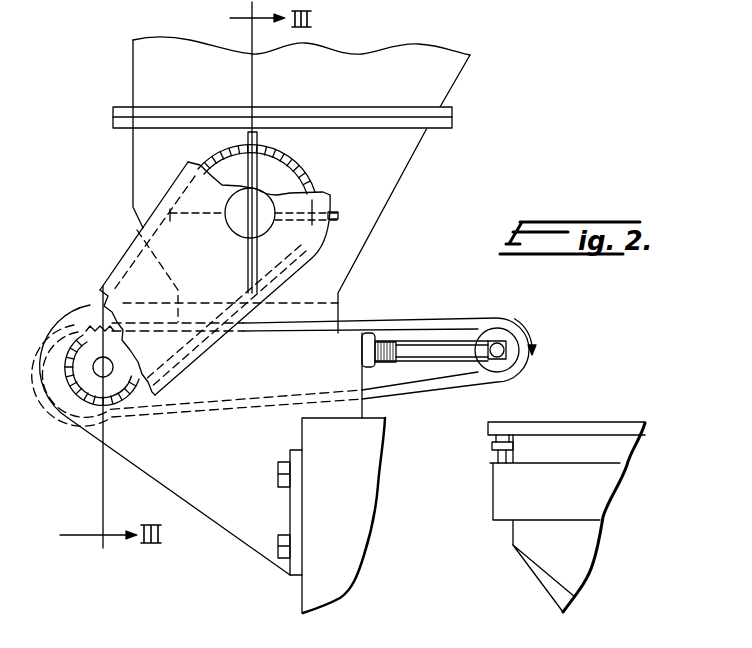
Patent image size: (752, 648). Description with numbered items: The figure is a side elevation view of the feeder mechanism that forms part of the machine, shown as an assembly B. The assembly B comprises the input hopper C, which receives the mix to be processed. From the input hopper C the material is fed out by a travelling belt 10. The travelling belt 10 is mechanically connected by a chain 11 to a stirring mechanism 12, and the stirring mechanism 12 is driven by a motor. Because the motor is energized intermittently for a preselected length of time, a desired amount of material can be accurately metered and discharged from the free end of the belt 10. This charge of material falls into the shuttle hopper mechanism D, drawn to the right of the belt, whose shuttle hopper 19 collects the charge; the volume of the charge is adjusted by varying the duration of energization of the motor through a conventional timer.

The travelling belt 10 is at (472, 322).
The chain 11 is at (93, 318).
The stirring mechanism 12 is at (340, 236).
The shuttle hopper 19 is at (530, 540).
The feeder assembly B is at (113, 244).
The input hopper C is at (440, 80).
The shuttle hopper mechanism D is at (585, 425).